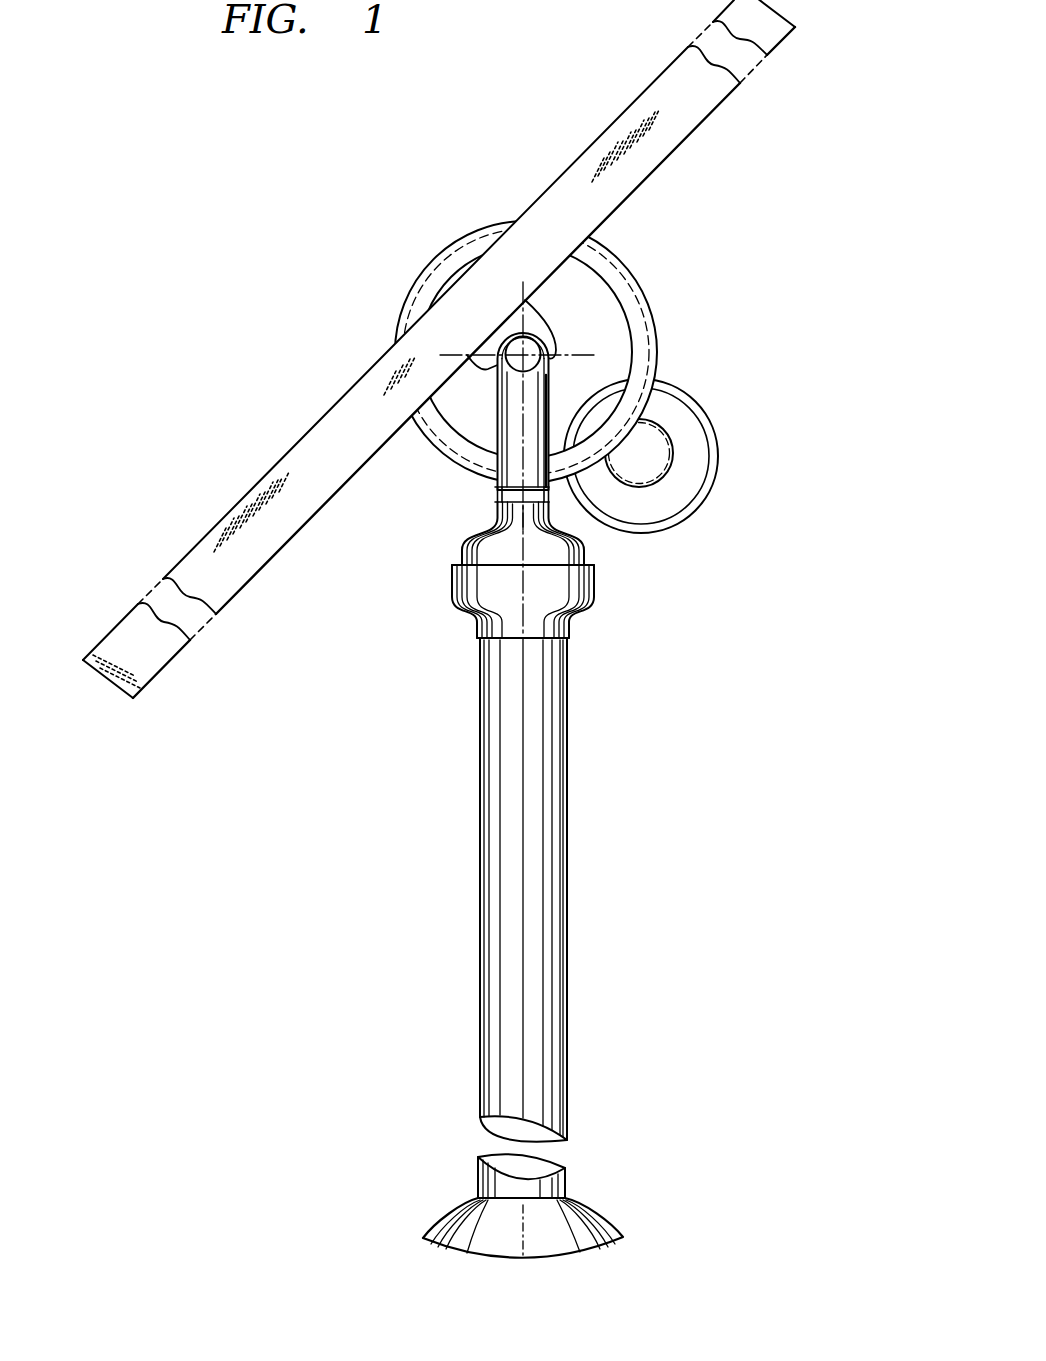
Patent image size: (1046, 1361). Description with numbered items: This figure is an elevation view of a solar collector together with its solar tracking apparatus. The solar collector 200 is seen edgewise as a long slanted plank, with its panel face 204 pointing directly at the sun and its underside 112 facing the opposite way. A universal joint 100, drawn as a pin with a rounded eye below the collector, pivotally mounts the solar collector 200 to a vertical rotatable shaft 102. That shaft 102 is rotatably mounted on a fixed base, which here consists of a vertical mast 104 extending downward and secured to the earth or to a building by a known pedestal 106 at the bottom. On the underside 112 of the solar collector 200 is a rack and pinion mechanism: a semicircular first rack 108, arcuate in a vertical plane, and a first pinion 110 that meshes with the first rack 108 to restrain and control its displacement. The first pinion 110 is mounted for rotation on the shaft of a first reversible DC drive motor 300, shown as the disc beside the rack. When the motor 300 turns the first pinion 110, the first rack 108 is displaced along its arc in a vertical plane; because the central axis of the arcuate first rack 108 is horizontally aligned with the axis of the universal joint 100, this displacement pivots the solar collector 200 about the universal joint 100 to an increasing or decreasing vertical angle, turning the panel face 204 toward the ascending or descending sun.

The universal joint 100 is at (497, 352).
The vertical rotatable shaft 102 is at (503, 492).
The vertical mast 104 is at (548, 848).
The pedestal 106 is at (580, 1225).
The first rack 108 is at (643, 322).
The first pinion 110 is at (673, 447).
The underside 112 is at (260, 570).
The solar collector 200 is at (456, 349).
The panel face 204 is at (641, 94).
The first reversible DC drive motor 300 is at (706, 497).